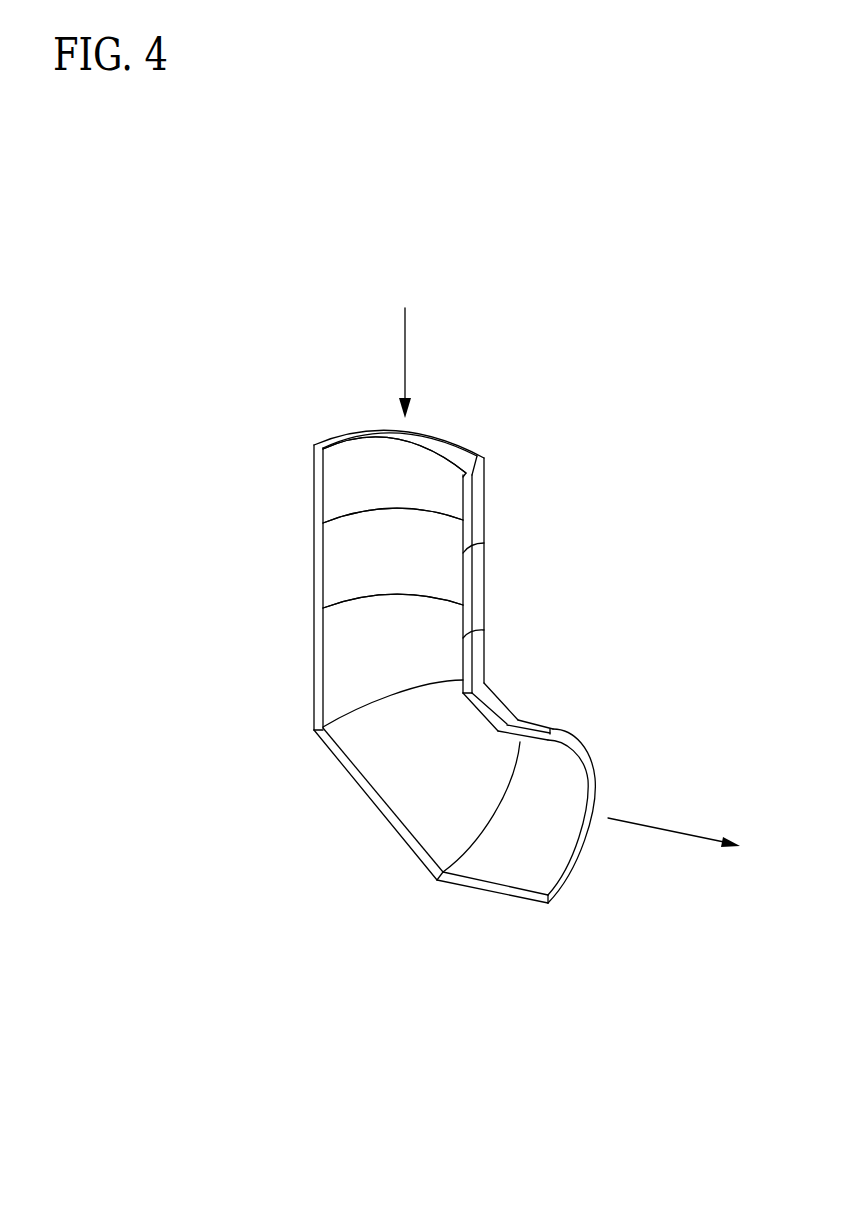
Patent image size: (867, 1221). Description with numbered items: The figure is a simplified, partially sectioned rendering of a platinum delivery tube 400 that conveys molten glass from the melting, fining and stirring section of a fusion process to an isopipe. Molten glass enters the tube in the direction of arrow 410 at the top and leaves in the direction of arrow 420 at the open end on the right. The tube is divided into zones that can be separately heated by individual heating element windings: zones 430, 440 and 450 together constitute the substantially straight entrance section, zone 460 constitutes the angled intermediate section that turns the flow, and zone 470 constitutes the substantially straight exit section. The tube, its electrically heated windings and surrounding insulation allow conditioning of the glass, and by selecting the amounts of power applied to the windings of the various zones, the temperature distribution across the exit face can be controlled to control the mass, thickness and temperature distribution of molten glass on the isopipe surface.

The delivery tube 400 is at (268, 347).
The arrow 410 is at (405, 348).
The arrow 420 is at (668, 828).
The zone 430 is at (315, 487).
The zone 440 is at (315, 567).
The zone 450 is at (315, 695).
The zone 460 is at (365, 800).
The zone 470 is at (475, 892).